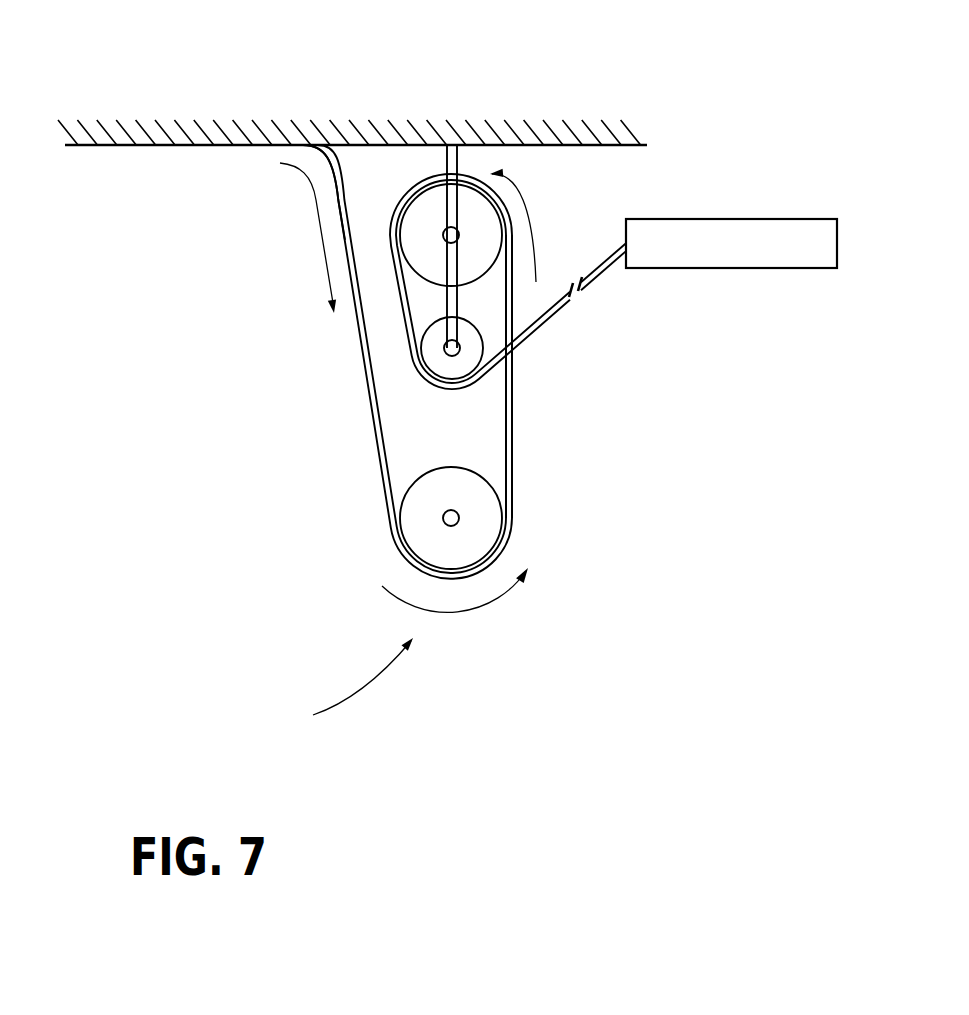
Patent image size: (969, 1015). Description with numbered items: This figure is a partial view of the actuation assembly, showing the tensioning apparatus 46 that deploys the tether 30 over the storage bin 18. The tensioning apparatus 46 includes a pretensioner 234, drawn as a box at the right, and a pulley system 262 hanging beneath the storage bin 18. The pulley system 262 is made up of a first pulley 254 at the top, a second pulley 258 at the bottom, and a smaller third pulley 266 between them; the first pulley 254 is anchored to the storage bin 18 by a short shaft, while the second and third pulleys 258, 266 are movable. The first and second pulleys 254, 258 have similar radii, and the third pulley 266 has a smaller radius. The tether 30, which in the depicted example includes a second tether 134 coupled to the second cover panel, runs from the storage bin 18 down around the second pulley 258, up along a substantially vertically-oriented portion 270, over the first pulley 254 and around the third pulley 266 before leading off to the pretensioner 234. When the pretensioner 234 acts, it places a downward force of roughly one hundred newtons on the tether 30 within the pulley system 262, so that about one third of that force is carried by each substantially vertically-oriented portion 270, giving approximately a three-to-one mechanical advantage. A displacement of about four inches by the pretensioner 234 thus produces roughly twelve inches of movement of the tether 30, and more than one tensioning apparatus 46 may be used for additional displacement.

The storage bin 18 is at (406, 170).
The tether 30 is at (327, 143).
The tensioning apparatus 46 is at (346, 687).
The second tether 134 is at (343, 210).
The pretensioner 234 is at (707, 250).
The first pulley 254 is at (428, 252).
The second pulley 258 is at (477, 519).
The pulley system 262 is at (546, 194).
The third pulley 266 is at (443, 342).
The substantially vertically-oriented portion 270 is at (525, 422).